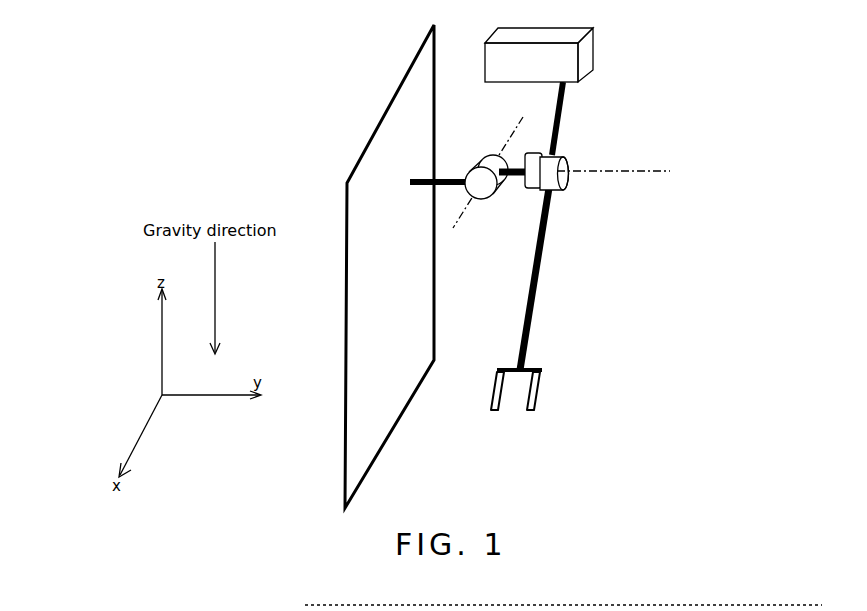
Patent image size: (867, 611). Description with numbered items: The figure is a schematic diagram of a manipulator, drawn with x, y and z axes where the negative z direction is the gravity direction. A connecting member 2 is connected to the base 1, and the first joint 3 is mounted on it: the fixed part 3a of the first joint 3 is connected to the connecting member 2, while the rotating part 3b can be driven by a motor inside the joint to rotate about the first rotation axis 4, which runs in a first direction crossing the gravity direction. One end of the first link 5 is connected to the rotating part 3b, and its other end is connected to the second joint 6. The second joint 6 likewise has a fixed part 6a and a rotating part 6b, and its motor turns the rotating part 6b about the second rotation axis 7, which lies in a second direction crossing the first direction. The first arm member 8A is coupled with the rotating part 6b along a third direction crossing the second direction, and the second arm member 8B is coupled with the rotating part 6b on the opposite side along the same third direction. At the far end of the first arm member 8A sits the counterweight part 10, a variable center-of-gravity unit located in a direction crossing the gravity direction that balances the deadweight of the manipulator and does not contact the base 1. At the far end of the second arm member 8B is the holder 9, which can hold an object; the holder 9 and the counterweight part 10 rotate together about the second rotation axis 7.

The base 1 is at (353, 168).
The connecting member 2 is at (410, 181).
The first joint 3 is at (402, 121).
The fixed part 3a is at (478, 178).
The rotating part 3b is at (488, 158).
The first rotation axis 4 is at (455, 227).
The first link 5 is at (512, 188).
The second joint 6 is at (605, 157).
The fixed part 6a is at (553, 157).
The rotating part 6b is at (561, 170).
The second rotation axis 7 is at (615, 173).
The first arm member 8A is at (568, 108).
The second arm member 8B is at (547, 223).
The holder 9 is at (542, 388).
The counterweight part 10 is at (594, 50).